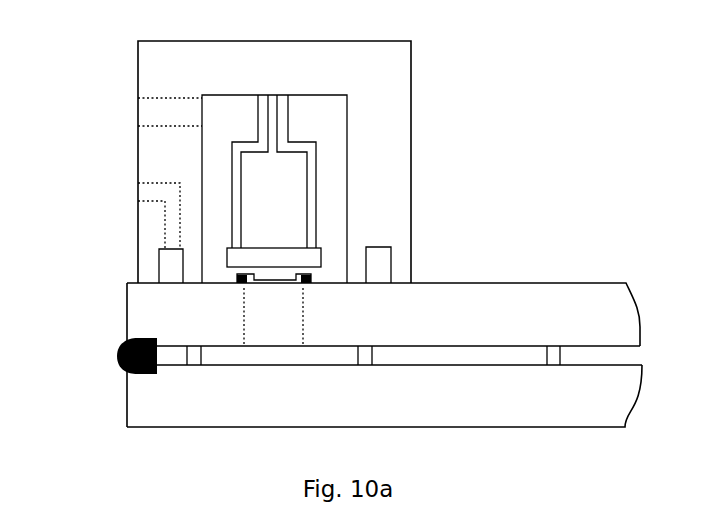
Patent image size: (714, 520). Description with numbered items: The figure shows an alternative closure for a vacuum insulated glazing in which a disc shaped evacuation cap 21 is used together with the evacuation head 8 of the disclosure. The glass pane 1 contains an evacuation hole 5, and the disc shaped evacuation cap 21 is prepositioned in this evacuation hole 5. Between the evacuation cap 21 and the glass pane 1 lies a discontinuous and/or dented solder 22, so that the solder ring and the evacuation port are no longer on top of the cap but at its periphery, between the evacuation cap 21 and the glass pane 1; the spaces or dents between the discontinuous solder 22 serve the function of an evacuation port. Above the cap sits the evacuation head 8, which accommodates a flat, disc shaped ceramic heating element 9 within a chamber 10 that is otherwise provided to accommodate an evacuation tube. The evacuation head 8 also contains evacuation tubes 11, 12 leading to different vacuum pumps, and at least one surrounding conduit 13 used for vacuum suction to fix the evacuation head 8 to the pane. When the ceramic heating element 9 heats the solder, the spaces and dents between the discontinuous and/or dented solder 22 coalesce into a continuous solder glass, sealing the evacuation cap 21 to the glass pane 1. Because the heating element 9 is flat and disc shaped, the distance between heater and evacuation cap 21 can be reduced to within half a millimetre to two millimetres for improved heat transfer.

The glass pane 1 is at (558, 296).
The evacuation hole 5 is at (286, 340).
The evacuation head 8 is at (155, 67).
The heating element 9 is at (274, 265).
The chamber 10 is at (238, 129).
The evacuation tube 11 is at (160, 192).
The evacuation tube 12 is at (158, 112).
The surrounding conduit 13 is at (160, 250).
The evacuation cap 21 is at (311, 288).
The solder 22 is at (237, 288).